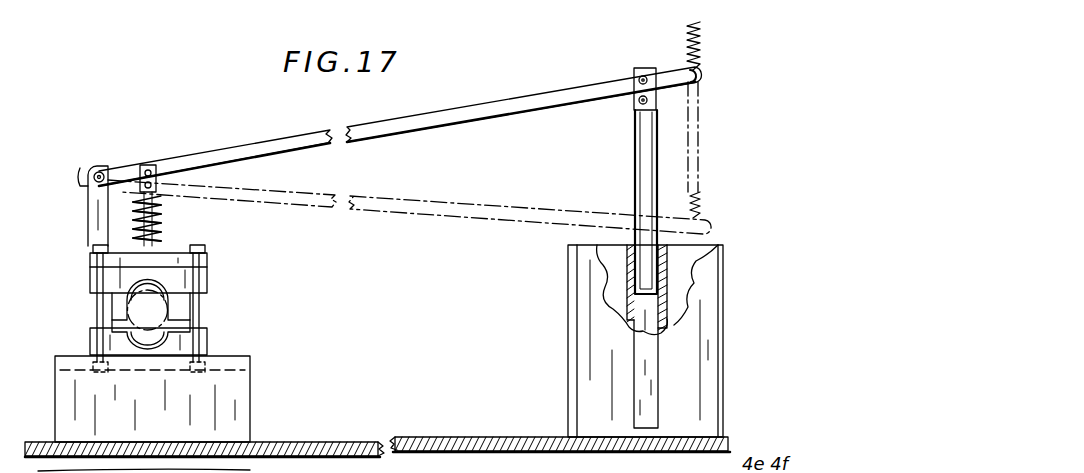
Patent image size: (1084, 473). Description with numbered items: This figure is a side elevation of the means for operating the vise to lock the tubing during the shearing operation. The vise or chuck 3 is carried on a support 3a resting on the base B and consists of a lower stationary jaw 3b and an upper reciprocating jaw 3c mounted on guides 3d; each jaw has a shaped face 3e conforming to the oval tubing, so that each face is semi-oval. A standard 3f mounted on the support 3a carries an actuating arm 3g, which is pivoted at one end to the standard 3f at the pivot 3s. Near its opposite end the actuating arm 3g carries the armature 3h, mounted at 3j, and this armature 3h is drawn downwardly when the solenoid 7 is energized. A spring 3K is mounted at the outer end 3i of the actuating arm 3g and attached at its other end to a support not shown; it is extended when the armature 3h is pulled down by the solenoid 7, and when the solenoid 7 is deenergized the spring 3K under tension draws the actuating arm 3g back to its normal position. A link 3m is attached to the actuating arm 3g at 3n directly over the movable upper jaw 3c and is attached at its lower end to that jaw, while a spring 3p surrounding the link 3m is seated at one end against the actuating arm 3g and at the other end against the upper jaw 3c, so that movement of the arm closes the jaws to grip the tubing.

The vise or chuck 3 is at (157, 317).
The support 3a is at (250, 416).
The lower stationary jaw 3b is at (208, 345).
The upper reciprocating jaw 3c is at (207, 270).
The guides 3d is at (97, 318).
The shaped face 3e is at (112, 300).
The standard 3f is at (80, 225).
The actuating arm 3g is at (462, 106).
The armature 3h is at (635, 148).
The outer end of the actuating arm 3i is at (698, 78).
The armature mounting 3j is at (643, 78).
The spring 3K is at (702, 46).
The link 3m is at (166, 208).
The link attachment 3n is at (152, 168).
The spring 3p is at (157, 228).
The pivot 3s is at (98, 176).
The solenoid 7 is at (726, 286).
The base B is at (354, 440).